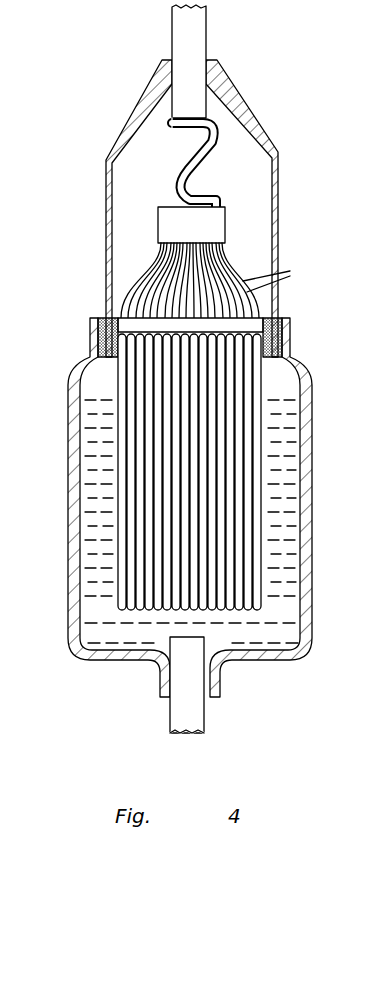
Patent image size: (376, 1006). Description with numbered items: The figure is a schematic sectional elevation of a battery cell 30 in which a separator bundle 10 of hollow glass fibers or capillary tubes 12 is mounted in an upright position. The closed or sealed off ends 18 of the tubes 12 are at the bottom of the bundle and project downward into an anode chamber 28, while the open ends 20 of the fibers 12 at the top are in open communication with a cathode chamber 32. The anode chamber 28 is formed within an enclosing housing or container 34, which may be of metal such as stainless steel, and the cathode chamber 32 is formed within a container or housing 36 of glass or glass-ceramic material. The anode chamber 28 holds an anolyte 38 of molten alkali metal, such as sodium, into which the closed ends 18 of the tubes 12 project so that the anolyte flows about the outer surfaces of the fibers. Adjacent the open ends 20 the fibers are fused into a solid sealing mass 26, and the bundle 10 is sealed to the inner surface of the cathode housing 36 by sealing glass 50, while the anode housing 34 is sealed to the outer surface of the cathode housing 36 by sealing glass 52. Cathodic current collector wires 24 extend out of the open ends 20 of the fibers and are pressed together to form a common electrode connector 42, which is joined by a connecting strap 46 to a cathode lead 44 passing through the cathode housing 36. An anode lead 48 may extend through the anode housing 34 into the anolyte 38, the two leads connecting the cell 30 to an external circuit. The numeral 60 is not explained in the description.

The separator bundle 10 is at (264, 562).
The hollow fibers or capillary tubes 12 is at (150, 527).
The closed or sealed off end 18 is at (212, 612).
The open end 20 is at (142, 317).
The current collector 24 is at (280, 277).
The solid sealing mass 26 is at (116, 333).
The anode chamber 28 is at (290, 461).
The battery cell 30 is at (263, 119).
The cathode chamber 32 is at (253, 232).
The housing or container 34 is at (312, 502).
The container or housing 36 is at (277, 162).
The anolyte 38 is at (97, 395).
The common electrode connector 42 is at (172, 227).
The cathode lead 44 is at (195, 30).
The connecting strap 46 is at (205, 160).
The anode lead 48 is at (193, 719).
The sealing glass 50 is at (272, 318).
The sealing glass 52 is at (288, 337).
The connection 60 is at (375, 293).